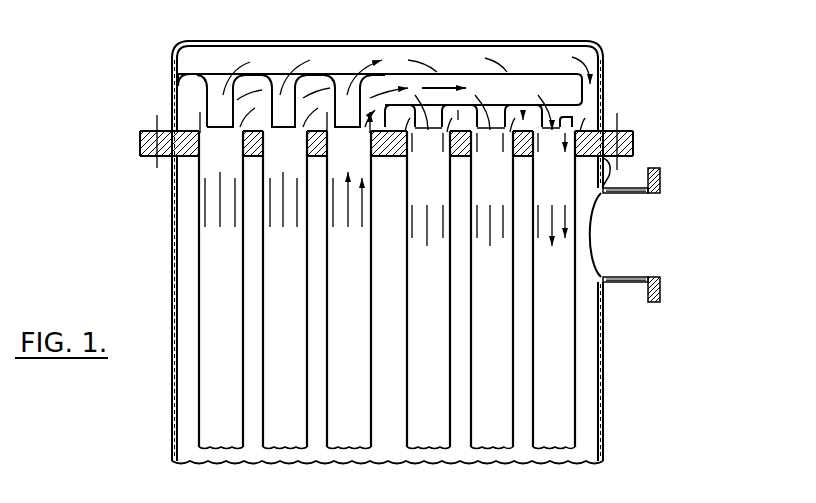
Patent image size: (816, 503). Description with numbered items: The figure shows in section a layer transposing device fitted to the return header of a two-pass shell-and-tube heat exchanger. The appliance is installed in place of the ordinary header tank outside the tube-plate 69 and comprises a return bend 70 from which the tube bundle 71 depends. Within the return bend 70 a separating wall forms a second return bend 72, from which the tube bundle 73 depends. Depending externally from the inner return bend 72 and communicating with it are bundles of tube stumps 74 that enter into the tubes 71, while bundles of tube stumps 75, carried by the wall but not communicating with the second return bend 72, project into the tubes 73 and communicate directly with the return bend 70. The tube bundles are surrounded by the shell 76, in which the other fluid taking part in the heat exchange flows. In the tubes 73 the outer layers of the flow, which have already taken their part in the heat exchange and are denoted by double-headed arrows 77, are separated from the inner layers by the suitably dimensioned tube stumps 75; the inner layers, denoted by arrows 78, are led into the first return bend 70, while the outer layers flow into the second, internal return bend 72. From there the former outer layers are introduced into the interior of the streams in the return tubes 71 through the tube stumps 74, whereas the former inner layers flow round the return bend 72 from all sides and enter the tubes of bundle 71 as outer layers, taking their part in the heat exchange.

The tube-plate 69 is at (143, 140).
The return bend 70 is at (449, 42).
The tube bundle 71 is at (491, 290).
The second return bend 72 is at (520, 88).
The tube bundle 73 is at (285, 290).
The tube stumps 74 is at (562, 118).
The tube stumps 75 is at (275, 100).
The shell 76 is at (173, 270).
The double-headed arrows 77 is at (237, 228).
The arrows 78 is at (222, 210).